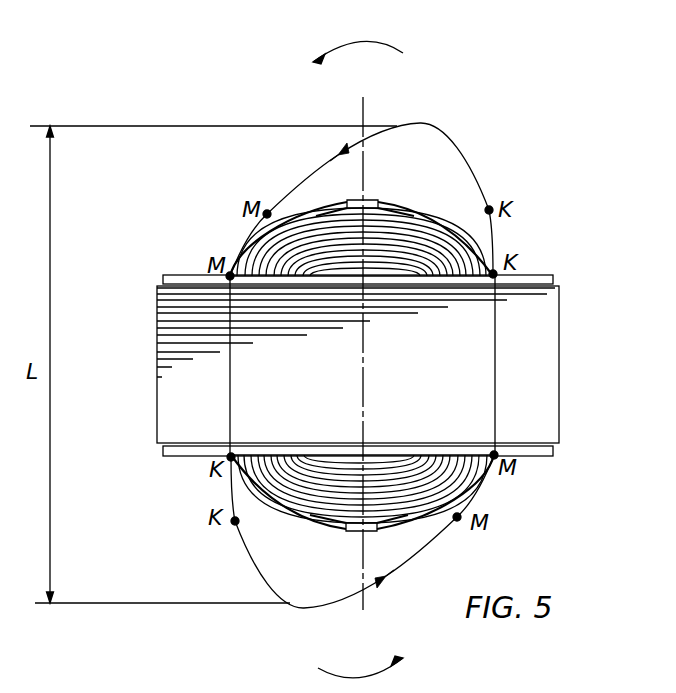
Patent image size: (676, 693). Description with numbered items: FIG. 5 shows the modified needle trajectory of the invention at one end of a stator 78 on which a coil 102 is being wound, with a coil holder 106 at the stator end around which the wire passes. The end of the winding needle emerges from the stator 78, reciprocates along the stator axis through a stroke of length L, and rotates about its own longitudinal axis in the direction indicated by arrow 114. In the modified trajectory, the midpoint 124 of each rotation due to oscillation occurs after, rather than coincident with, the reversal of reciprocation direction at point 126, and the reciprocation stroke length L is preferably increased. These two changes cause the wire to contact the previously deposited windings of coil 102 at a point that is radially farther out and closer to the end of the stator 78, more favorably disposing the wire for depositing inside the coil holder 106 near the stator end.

The stator 78 is at (555, 350).
The coil 102 is at (313, 242).
The coil holder 106 is at (392, 203).
The arrow indicating direction of rotation 114 is at (380, 32).
The midpoint of rotation 124 is at (367, 144).
The reversal point of reciprocation direction 126 is at (420, 124).